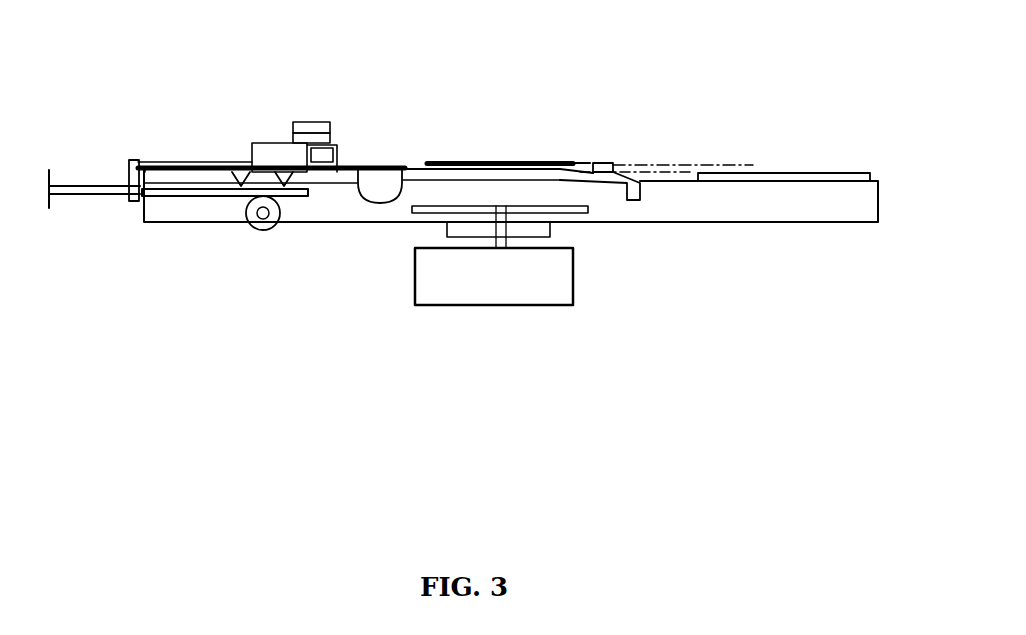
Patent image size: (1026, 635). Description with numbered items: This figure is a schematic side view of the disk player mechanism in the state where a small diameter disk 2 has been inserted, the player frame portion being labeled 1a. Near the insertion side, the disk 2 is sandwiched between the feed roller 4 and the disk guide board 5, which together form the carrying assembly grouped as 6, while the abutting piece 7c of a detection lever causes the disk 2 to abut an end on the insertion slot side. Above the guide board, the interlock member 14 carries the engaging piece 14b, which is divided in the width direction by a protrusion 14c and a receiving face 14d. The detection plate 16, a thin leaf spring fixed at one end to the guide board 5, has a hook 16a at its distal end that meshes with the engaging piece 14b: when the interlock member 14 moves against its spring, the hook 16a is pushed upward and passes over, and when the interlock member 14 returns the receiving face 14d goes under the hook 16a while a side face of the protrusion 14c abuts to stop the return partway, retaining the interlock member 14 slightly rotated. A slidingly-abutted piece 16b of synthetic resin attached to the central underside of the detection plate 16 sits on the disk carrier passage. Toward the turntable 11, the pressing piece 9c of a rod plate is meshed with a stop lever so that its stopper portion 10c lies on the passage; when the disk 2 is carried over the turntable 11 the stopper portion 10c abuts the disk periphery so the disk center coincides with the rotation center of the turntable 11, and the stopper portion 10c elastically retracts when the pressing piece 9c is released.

The main body / base plate 1a is at (802, 163).
The disk 2 is at (77, 197).
The feed roller 4 is at (258, 231).
The disk guide board 5 is at (235, 187).
The detent mechanism 6 is at (229, 265).
The abutting piece 7c is at (130, 170).
The pressing piece 9c is at (605, 165).
The stopper portion 10c is at (638, 202).
The turntable 11 is at (590, 218).
The interlock member 14 is at (252, 143).
The engaging piece 14b is at (368, 77).
The protrusion 14c is at (312, 122).
The receiving face 14d is at (330, 135).
The detection plate 16 is at (488, 162).
The hook 16a is at (338, 158).
The slidingly-abutted piece 16b is at (372, 197).